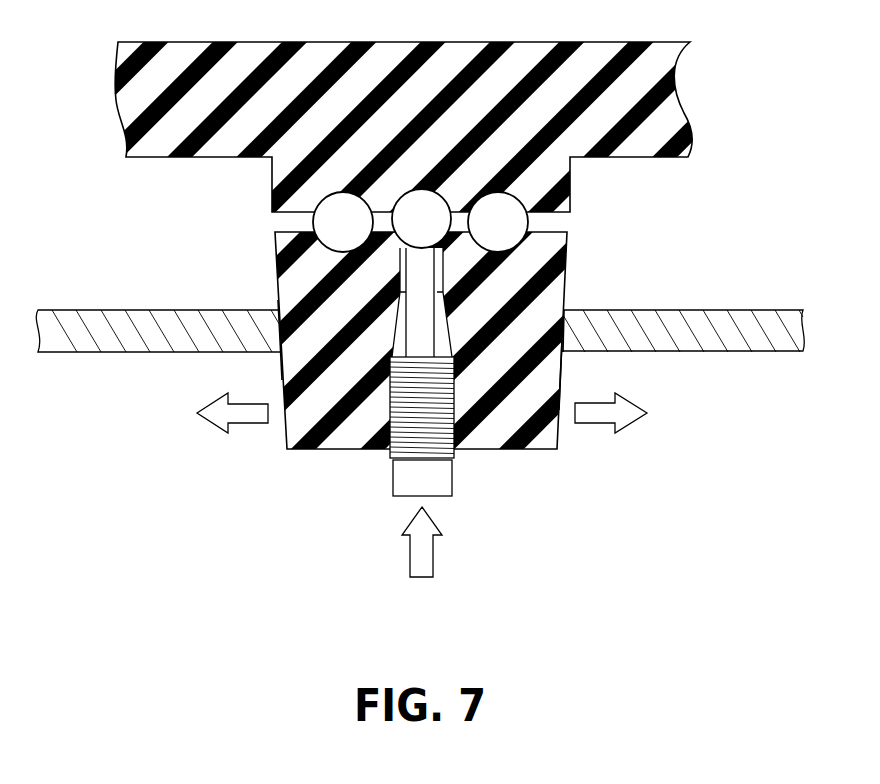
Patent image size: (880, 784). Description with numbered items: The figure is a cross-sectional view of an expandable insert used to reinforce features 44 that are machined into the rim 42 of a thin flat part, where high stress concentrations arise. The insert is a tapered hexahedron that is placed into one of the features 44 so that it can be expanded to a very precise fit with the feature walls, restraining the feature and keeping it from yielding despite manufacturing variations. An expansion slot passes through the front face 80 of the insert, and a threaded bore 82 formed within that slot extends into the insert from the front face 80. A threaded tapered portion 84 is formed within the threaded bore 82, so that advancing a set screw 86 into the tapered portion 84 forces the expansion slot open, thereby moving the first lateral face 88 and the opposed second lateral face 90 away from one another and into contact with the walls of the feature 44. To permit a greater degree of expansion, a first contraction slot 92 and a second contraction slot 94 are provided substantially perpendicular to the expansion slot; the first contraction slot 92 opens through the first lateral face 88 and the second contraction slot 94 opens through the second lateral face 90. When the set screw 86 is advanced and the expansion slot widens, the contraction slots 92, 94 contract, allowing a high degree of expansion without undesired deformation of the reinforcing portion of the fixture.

The rim 42 is at (766, 310).
The features 44 is at (563, 327).
The front face 80 is at (317, 449).
The threaded bore 82 is at (393, 393).
The threaded tapered portion 84 is at (452, 332).
The set screw 86 is at (453, 473).
The first lateral face 88 is at (280, 361).
The second lateral face 90 is at (558, 382).
The first contraction slot 92 is at (300, 232).
The second contraction slot 94 is at (540, 230).